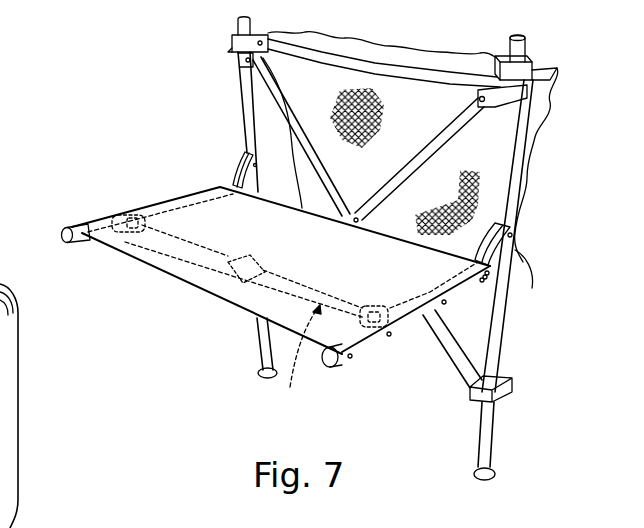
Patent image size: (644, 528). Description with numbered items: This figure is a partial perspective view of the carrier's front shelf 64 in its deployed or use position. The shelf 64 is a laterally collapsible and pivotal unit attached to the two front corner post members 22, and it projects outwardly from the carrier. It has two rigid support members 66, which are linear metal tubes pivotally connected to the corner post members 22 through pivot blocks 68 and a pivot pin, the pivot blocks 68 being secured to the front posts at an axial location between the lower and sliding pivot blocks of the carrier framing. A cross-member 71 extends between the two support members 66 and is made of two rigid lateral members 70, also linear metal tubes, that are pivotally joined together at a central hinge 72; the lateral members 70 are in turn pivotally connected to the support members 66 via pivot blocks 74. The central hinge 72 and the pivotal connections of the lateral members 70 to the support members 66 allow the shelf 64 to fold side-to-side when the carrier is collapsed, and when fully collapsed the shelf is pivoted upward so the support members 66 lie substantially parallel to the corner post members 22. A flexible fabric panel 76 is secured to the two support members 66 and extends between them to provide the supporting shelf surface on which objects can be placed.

The front corner post member 22 is at (258, 342).
The shelf 64 is at (120, 112).
The support member 66 is at (90, 227).
The pivot block 68 is at (238, 182).
The lateral member 70 is at (167, 240).
The cross-member 71 is at (301, 362).
The central hinge 72 is at (233, 277).
The pivot block 74 is at (125, 217).
The flexible fabric panel 76 is at (192, 210).